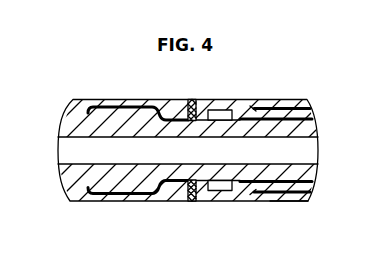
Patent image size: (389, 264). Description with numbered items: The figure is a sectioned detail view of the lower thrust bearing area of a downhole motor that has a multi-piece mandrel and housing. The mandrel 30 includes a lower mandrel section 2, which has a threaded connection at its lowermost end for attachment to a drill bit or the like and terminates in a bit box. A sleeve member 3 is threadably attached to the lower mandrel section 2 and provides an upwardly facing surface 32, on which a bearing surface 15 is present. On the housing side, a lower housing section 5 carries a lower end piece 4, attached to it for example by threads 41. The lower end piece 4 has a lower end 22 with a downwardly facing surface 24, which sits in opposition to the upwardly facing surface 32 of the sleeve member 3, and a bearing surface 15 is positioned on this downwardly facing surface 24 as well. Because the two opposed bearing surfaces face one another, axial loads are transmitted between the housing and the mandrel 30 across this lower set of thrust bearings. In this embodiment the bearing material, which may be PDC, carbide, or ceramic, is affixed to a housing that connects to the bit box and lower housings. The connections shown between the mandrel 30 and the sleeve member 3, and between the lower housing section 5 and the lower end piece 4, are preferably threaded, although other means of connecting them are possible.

The lower mandrel section 2 is at (73, 99).
The sleeve member 3 is at (133, 180).
The lower end piece 4 is at (235, 195).
The lower housing section 5 is at (295, 202).
The bearing surface 15 is at (190, 203).
The lower end 22 is at (202, 100).
The downwardly facing surface 24 is at (193, 202).
The mandrel 30 is at (68, 188).
The upwardly facing surface 32 is at (190, 100).
The threads 41 is at (293, 108).